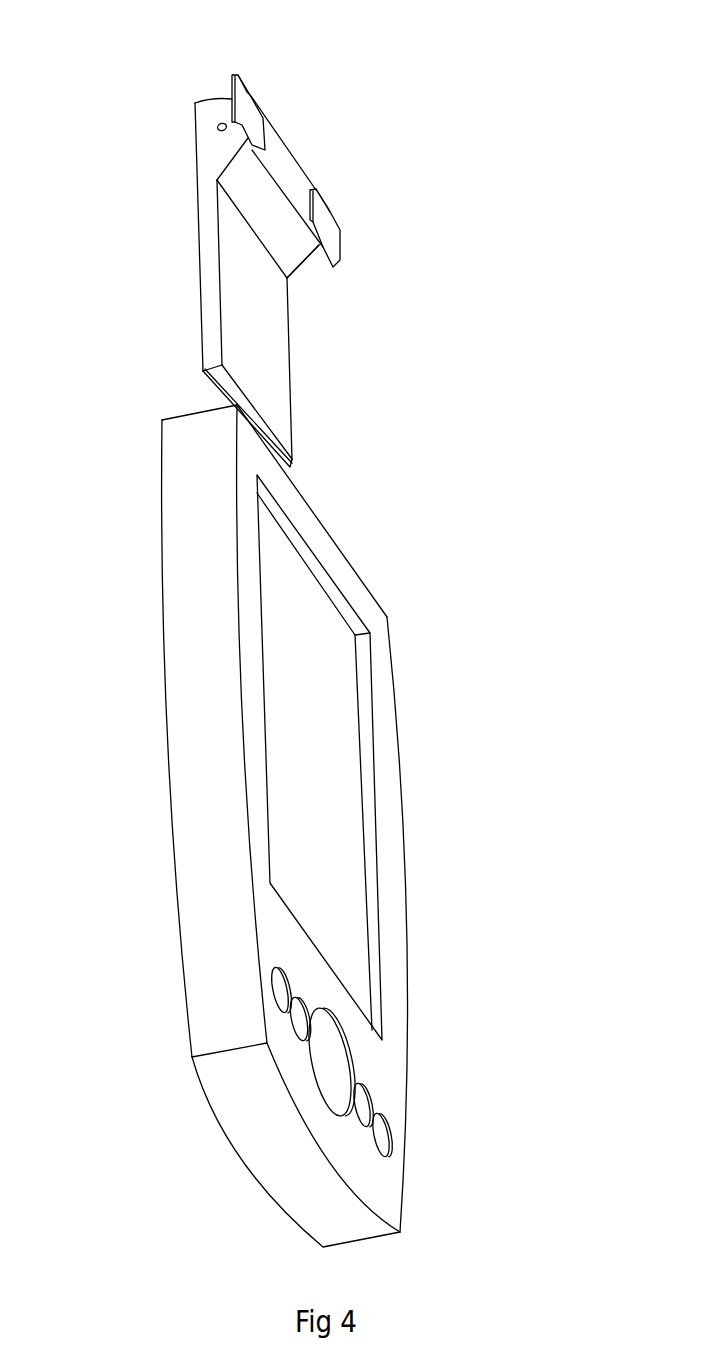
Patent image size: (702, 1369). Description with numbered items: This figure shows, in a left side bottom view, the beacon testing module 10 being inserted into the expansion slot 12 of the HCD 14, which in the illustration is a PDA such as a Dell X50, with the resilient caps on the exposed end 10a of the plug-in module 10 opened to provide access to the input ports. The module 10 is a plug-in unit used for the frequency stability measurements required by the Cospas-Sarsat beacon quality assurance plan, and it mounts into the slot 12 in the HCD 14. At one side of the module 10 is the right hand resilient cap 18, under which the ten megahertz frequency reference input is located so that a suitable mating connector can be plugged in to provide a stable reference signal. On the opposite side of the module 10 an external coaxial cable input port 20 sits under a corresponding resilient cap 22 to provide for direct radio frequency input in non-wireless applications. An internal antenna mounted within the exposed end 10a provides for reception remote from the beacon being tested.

The beacon testing module 10 is at (307, 107).
The exposed end of the plug-in module 10a is at (298, 265).
The expansion slot 12 is at (178, 415).
The HCD 14 is at (417, 853).
The right hand resilient cap 18 is at (332, 227).
The external coaxial cable input port 20 is at (216, 128).
The resilient cap 22 is at (245, 107).